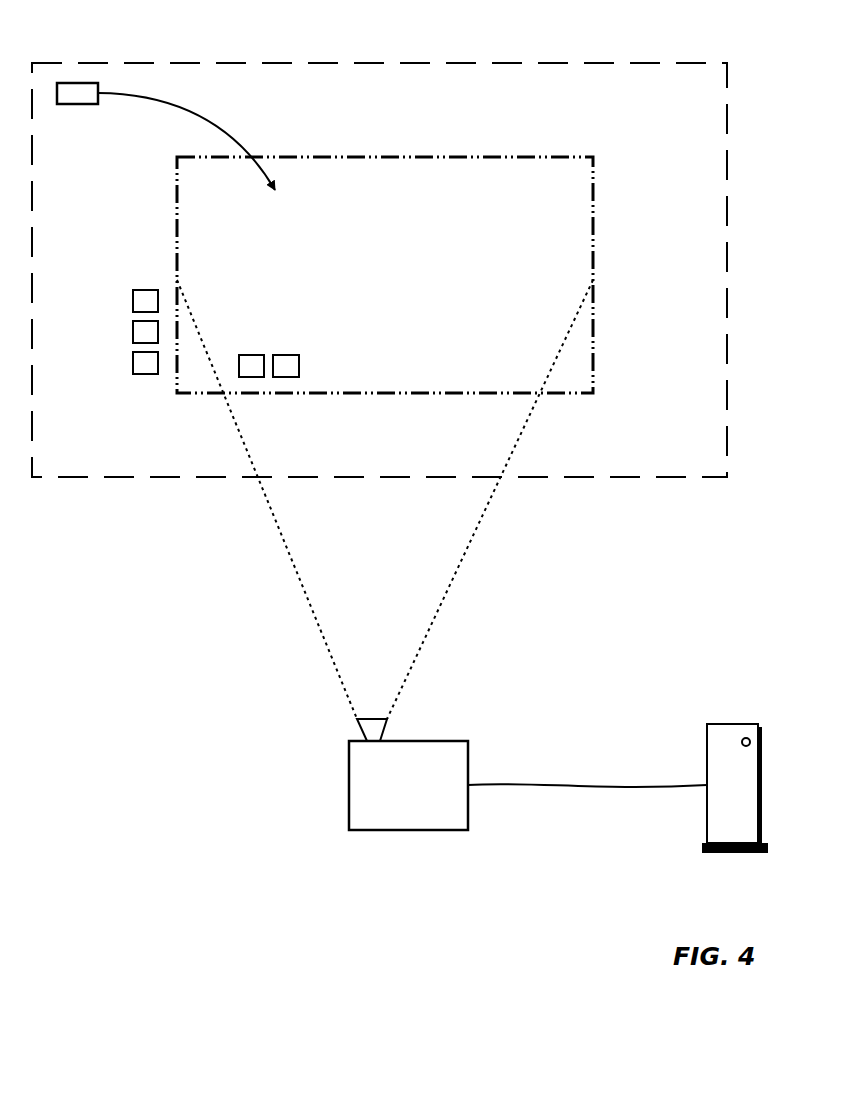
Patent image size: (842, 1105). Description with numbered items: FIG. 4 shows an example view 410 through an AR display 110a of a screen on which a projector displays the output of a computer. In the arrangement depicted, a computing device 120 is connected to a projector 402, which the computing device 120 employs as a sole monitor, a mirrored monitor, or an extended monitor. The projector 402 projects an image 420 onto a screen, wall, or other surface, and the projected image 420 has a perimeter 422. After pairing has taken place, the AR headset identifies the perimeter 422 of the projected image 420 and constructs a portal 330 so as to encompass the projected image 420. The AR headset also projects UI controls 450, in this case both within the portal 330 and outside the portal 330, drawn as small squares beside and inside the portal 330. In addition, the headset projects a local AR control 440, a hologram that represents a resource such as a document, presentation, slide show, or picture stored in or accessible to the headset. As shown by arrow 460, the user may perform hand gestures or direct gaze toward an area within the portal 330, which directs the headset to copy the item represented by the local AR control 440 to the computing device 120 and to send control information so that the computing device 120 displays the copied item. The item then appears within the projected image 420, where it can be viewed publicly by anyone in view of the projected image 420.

The view through AR display 410 is at (379, 270).
The AR display 110a is at (379, 270).
The local AR control 440 is at (78, 83).
The arrow 460 is at (203, 120).
The projected image 420 is at (385, 275).
The perimeter of projected image 422 is at (380, 158).
The portal 330 is at (380, 393).
The UI controls 450 is at (268, 387).
The projector 402 is at (408, 774).
The computing device 120 is at (731, 724).